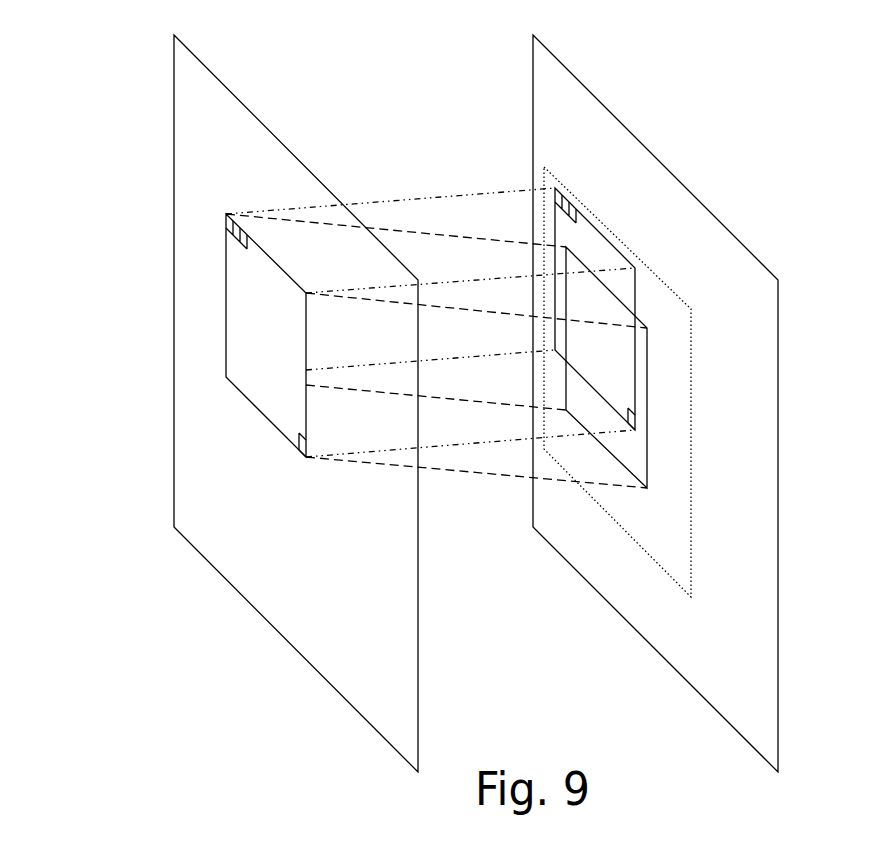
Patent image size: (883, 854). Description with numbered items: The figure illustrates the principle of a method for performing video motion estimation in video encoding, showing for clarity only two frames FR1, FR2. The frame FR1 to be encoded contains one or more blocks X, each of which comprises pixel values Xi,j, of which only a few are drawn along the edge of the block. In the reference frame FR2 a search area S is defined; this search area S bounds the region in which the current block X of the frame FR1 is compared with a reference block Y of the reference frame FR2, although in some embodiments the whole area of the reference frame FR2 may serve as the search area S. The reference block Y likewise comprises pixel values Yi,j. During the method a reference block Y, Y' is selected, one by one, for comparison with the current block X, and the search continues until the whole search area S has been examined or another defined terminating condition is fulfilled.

The frame to be encoded FR1 is at (174, 156).
The reference frame FR2 is at (533, 78).
The current block X is at (226, 294).
The pixel values of block X Xi,j is at (226, 228).
The reference block Y is at (621, 309).
The pixel values of reference block Y Yi,j is at (560, 190).
The reference block Y' is at (656, 367).
The search area S is at (691, 497).